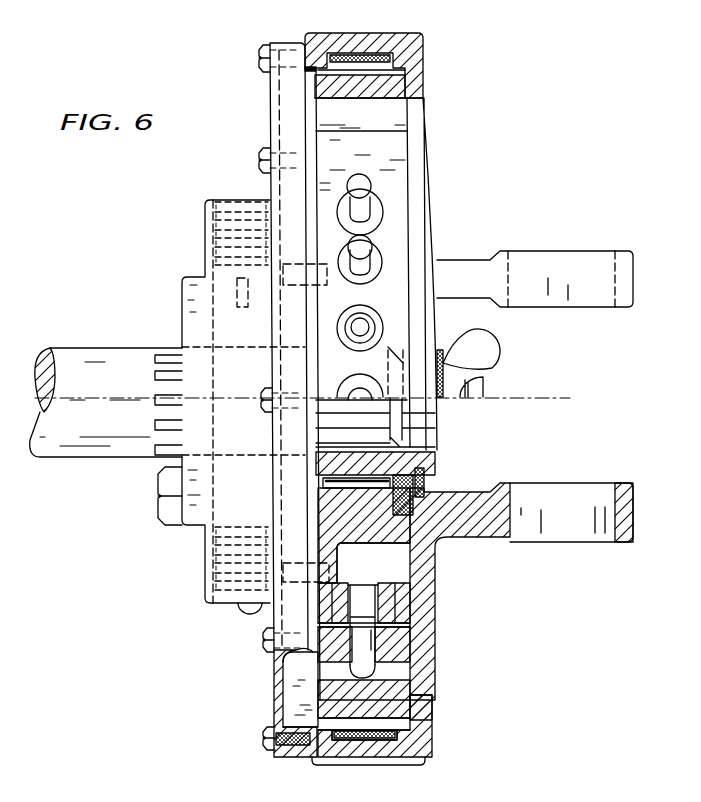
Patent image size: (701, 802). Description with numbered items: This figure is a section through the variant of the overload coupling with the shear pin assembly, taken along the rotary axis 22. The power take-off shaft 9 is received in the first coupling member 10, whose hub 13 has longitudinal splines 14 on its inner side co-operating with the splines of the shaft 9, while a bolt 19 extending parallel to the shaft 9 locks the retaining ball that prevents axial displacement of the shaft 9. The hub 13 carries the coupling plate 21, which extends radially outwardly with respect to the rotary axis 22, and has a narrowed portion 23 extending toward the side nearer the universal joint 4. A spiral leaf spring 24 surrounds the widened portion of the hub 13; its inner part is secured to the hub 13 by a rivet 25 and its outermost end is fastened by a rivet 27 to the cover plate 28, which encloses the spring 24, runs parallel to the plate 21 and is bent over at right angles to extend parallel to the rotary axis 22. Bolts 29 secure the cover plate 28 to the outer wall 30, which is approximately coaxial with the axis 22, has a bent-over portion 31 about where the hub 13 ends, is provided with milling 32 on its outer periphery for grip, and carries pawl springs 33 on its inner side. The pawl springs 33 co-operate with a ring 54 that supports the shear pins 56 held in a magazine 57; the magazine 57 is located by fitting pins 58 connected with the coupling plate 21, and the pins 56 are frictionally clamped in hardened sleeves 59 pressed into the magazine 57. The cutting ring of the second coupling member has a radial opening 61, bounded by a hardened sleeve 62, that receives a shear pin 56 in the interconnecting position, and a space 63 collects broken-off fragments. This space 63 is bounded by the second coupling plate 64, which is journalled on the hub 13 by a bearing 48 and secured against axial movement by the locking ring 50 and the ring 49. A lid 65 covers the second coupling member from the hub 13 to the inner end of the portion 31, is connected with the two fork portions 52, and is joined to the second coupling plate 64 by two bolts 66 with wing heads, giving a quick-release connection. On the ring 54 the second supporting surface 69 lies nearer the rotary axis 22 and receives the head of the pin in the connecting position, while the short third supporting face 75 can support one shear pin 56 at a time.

The universal joint 4 is at (606, 251).
The power take-off shaft 9 is at (76, 347).
The first coupling member 10 is at (182, 302).
The hub 13 is at (325, 467).
The longitudinal splines 14 is at (430, 418).
The bolt 19 is at (157, 487).
The coupling plate 21 is at (290, 690).
The rotary axis 22 is at (521, 399).
The narrowed portion 23 is at (430, 458).
The spiral leaf spring 24 is at (217, 560).
The rivet 25 is at (240, 308).
The rivet 27 is at (240, 608).
The cover plate 28 is at (275, 678).
The bolts 29 is at (257, 148).
The outer wall 30 is at (430, 745).
The bent-over portion 31 is at (420, 63).
The milling 32 is at (327, 763).
The pawl spring 33 is at (357, 53).
The bearing 48 is at (330, 490).
The ring 49 is at (425, 482).
The locking ring 50 is at (395, 505).
The fork portions 52 is at (598, 305).
The ring 54 is at (430, 727).
The shear pins 56 is at (372, 237).
The magazine 57 is at (403, 252).
The fitting pins 58 is at (293, 262).
The hardened sleeves 59 is at (370, 312).
The radial opening 61 is at (365, 592).
The hardened sleeve 62 is at (402, 604).
The space 63 is at (398, 557).
The second coupling plate 64 is at (335, 527).
The lid 65 is at (430, 190).
The bolts 66 is at (497, 362).
The second supporting surface 69 is at (328, 677).
The third supporting face 75 is at (400, 121).